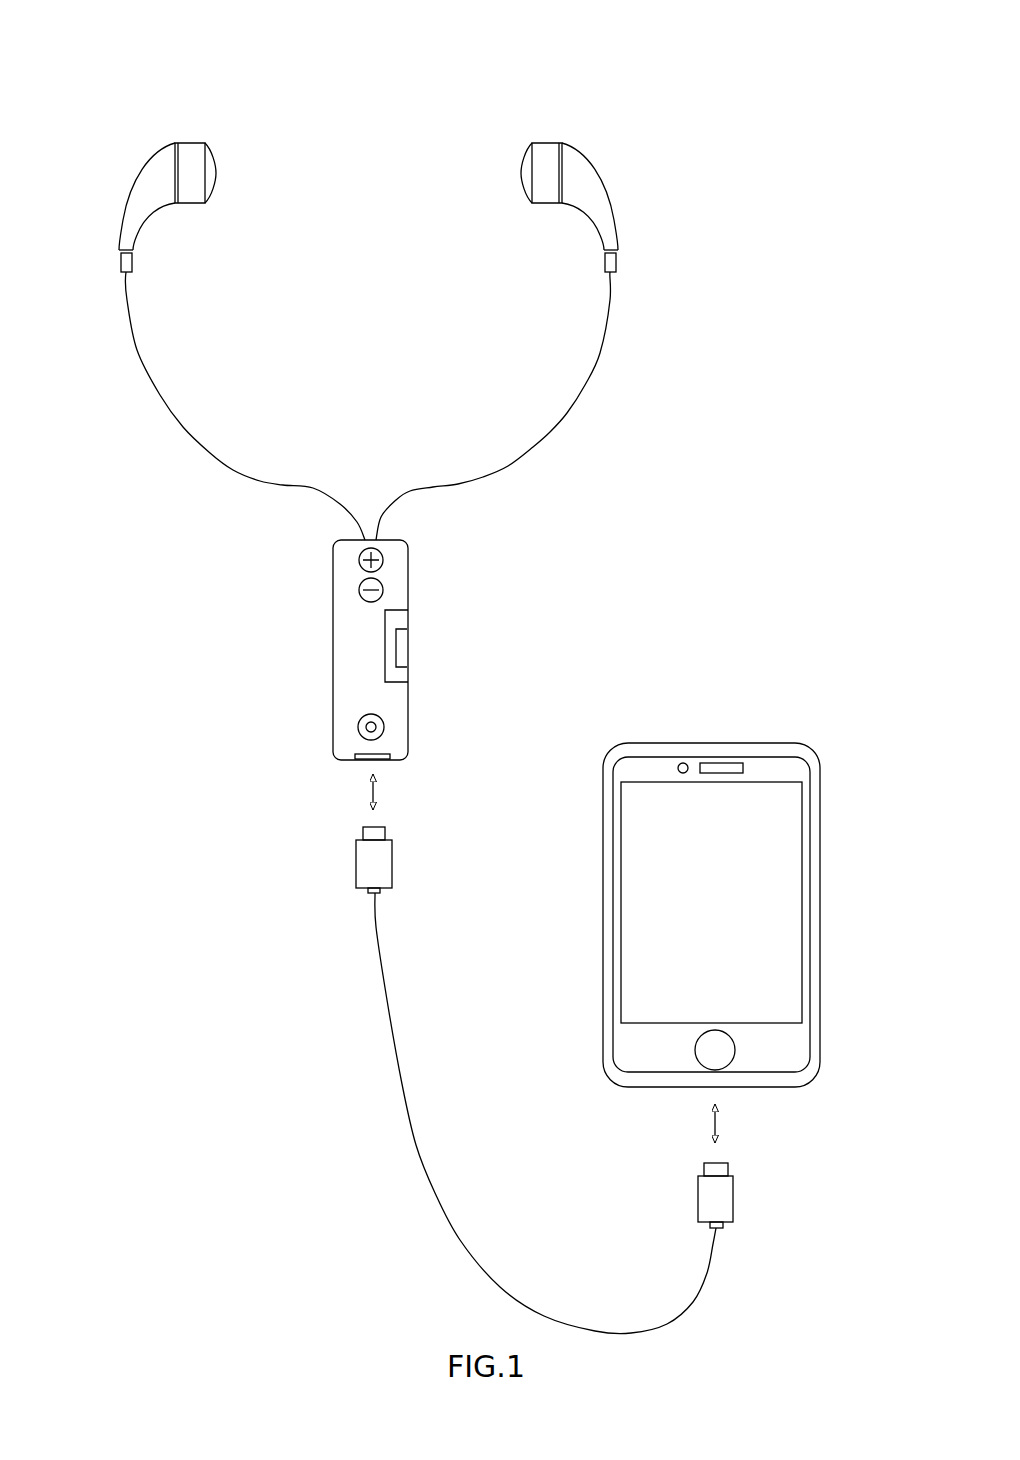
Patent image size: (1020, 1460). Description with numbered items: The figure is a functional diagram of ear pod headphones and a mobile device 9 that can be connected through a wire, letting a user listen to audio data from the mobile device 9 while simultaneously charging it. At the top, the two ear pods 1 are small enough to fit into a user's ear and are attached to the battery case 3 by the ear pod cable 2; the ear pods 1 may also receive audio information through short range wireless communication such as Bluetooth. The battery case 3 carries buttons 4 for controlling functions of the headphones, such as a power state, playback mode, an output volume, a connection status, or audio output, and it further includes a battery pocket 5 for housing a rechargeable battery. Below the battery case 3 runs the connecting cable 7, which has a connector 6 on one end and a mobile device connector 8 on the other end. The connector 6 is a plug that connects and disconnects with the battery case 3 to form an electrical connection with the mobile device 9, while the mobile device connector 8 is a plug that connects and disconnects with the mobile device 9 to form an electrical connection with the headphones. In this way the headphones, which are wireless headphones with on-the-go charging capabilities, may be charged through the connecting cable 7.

The ear pods 1 is at (213, 157).
The ear pod cable 2 is at (140, 345).
The battery case 3 is at (332, 645).
The buttons 4 is at (388, 562).
The battery pocket 5 is at (410, 642).
The connector 6 is at (355, 862).
The connecting cable 7 is at (414, 1143).
The mobile device connector 8 is at (737, 1207).
The mobile device 9 is at (765, 742).